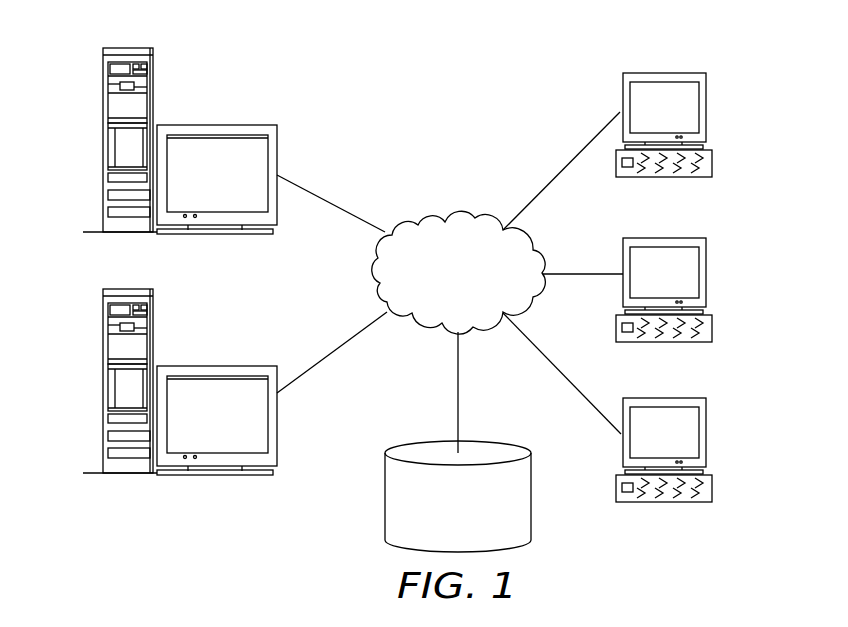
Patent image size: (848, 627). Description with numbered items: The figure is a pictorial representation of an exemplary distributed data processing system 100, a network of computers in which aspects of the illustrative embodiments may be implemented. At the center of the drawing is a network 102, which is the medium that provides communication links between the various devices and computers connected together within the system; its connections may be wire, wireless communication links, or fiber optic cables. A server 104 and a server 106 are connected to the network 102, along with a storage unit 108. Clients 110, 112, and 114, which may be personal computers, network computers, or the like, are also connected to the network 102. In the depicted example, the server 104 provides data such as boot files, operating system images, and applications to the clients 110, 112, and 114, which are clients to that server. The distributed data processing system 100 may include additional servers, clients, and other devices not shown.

The distributed data processing system 100 is at (517, 85).
The network 102 is at (428, 218).
The server 104 is at (102, 143).
The server 106 is at (102, 386).
The storage unit 108 is at (385, 508).
The client 110 is at (708, 108).
The client 112 is at (707, 273).
The client 114 is at (707, 433).